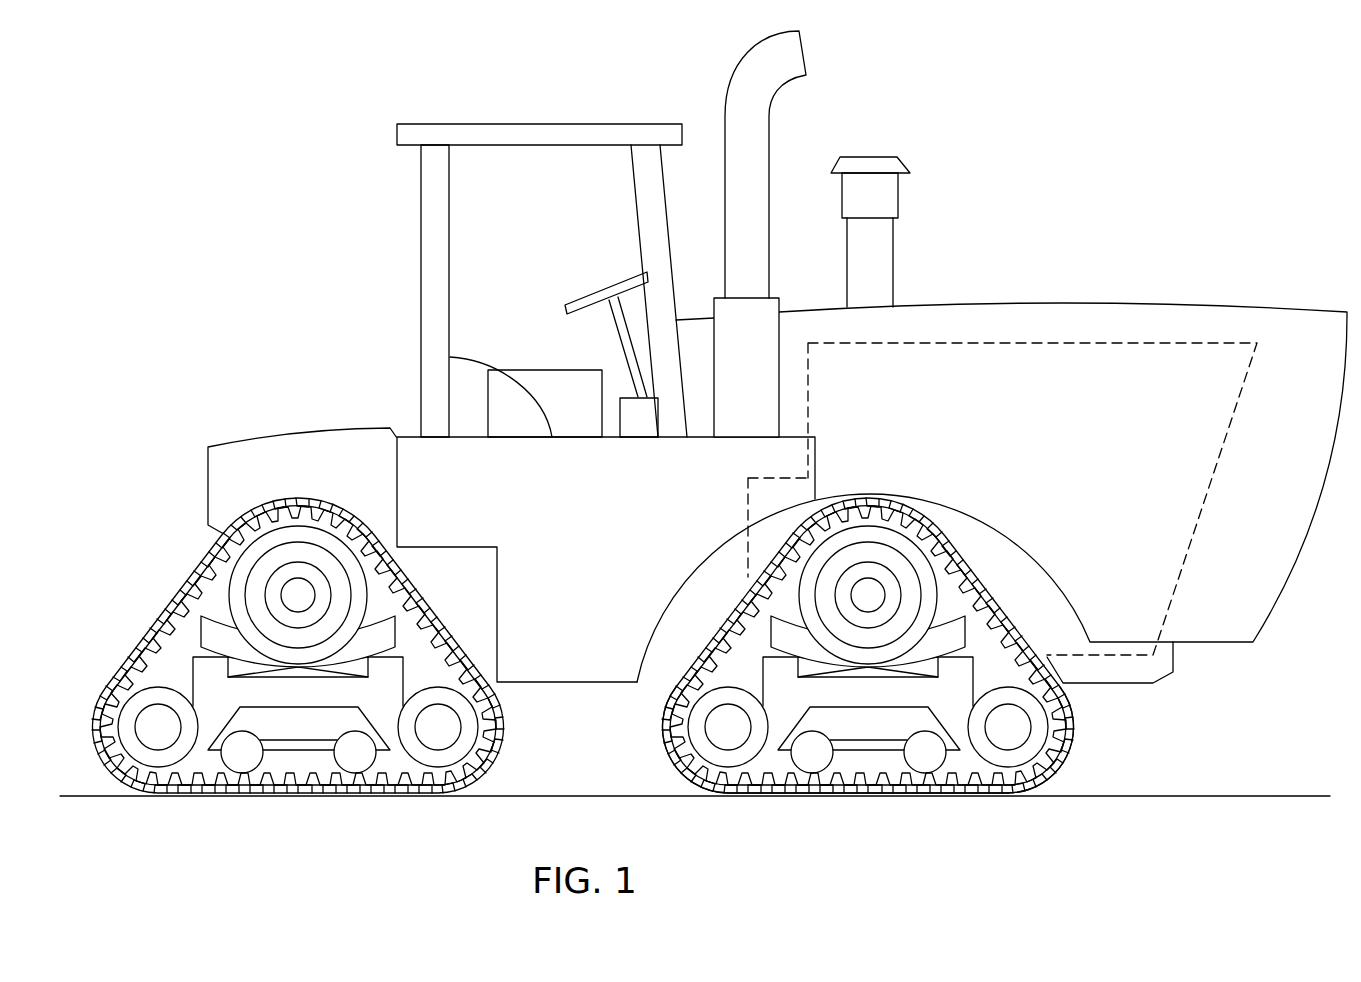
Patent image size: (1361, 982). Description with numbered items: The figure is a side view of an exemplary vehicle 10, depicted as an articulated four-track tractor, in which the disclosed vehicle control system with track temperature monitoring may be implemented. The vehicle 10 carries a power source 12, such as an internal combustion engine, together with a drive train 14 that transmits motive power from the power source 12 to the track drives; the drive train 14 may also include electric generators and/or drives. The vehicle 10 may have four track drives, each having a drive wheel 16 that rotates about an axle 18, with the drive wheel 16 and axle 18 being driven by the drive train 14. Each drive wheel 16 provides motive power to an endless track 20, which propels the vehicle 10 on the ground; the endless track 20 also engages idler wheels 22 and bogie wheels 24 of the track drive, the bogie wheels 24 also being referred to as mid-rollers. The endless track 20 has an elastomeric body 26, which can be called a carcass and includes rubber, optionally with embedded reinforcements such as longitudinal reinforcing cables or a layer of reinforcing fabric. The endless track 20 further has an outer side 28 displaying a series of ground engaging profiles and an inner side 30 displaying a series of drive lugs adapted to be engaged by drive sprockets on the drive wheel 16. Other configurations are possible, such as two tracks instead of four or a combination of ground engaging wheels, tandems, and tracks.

The vehicle 10 is at (212, 170).
The power source 12 is at (1052, 343).
The drive train 14 is at (748, 478).
The drive wheel 16 is at (828, 608).
The axle 18 is at (868, 595).
The endless track 20 is at (997, 605).
The idler wheels 22 is at (1037, 746).
The bogie wheels 24 is at (928, 753).
The elastomeric body 26 is at (1036, 784).
The outer side 28 is at (687, 787).
The inner side 30 is at (990, 783).